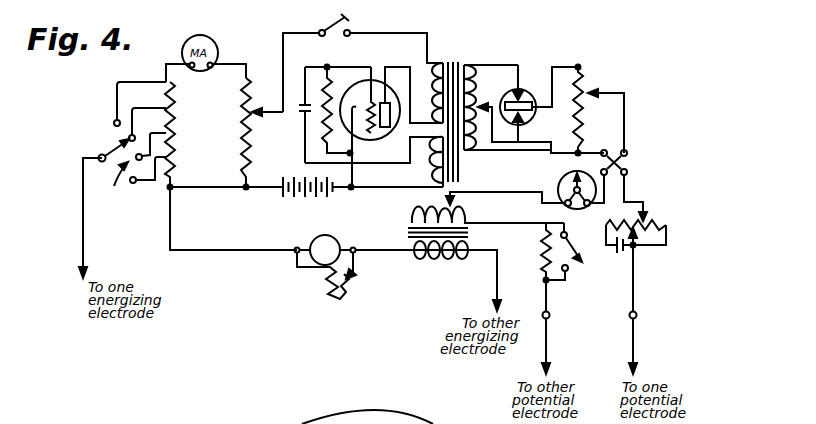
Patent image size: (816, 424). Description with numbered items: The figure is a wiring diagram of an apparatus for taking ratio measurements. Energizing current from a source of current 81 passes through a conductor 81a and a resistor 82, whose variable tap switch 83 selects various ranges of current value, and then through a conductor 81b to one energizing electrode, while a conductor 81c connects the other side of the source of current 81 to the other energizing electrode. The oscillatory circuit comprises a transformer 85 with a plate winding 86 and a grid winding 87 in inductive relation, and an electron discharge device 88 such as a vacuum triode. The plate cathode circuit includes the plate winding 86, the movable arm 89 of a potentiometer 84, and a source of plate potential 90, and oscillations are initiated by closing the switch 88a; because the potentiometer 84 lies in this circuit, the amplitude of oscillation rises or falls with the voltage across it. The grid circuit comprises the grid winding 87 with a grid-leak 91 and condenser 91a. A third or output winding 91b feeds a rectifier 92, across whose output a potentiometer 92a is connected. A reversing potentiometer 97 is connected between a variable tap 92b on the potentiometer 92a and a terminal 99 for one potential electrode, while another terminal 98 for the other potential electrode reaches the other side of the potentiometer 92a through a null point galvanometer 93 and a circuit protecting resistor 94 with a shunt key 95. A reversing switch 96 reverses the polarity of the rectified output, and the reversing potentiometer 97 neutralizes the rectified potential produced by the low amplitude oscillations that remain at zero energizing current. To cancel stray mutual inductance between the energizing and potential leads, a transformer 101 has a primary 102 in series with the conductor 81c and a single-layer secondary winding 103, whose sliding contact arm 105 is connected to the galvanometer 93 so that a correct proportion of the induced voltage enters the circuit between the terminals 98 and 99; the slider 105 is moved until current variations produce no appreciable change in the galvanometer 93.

The source of current 81 is at (338, 240).
The conductor 81a is at (172, 230).
The conductor 81b is at (85, 247).
The conductor 81c is at (390, 254).
The resistor 82 is at (172, 127).
The variable tap switch 83 is at (114, 187).
The potentiometer 84 is at (235, 134).
The transformer 85 is at (467, 58).
The plate winding 86 is at (437, 62).
The grid winding 87 is at (433, 171).
The electron discharge device 88 is at (385, 74).
The switch 88a is at (363, 63).
The movable arm 89 is at (267, 105).
The source of plate potential 90 is at (292, 214).
The grid-leak 91 is at (330, 80).
The condenser 91a is at (302, 116).
The output winding 91b is at (479, 65).
The rectifier 92 is at (526, 90).
The potentiometer 92a is at (584, 85).
The variable tap 92b is at (611, 93).
The null point galvanometer 93 is at (558, 180).
The circuit protecting resistor 94 is at (540, 250).
The shunt key 95 is at (581, 256).
The reversing switch 96 is at (627, 163).
The reversing potentiometer 97 is at (652, 222).
The terminal 98 is at (550, 315).
The terminal 99 is at (637, 315).
The transformer 101 is at (407, 233).
The primary 102 is at (457, 253).
The secondary winding 103 is at (470, 215).
The sliding contact arm 105 is at (465, 200).